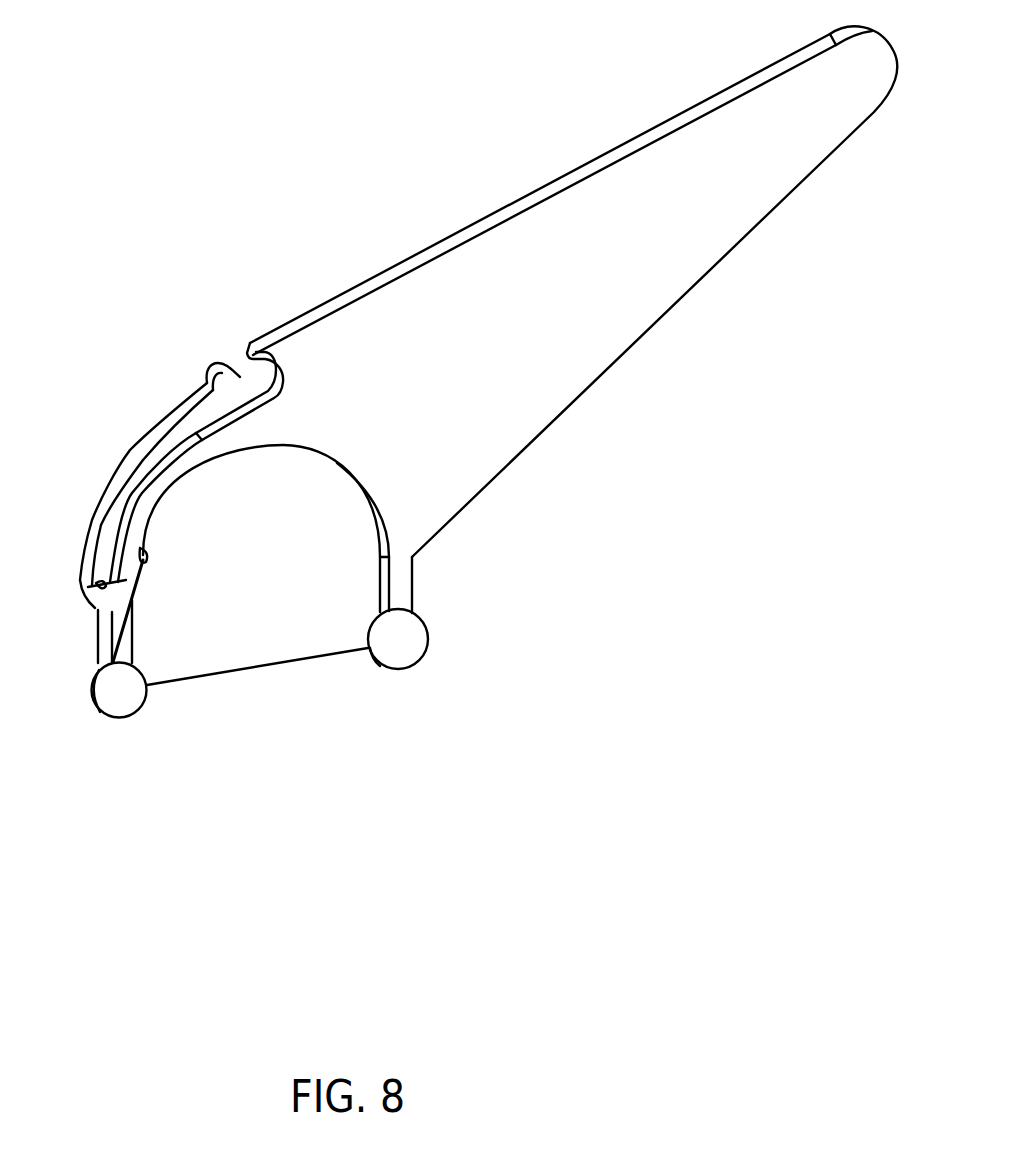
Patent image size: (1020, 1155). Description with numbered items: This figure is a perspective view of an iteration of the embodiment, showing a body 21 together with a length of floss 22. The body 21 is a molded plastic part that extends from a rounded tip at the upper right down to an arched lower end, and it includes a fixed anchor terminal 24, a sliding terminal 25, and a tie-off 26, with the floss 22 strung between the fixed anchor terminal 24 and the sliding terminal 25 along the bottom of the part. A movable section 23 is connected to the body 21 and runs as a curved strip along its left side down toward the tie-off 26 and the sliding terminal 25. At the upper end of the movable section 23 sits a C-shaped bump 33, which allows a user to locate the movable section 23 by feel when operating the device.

The body 21 is at (392, 262).
The length of floss 22 is at (255, 670).
The movable section 23 is at (145, 417).
The fixed anchor terminal 24 is at (412, 667).
The sliding terminal 25 is at (125, 720).
The tie-off 26 is at (74, 556).
The C-shaped bump 33 is at (210, 362).